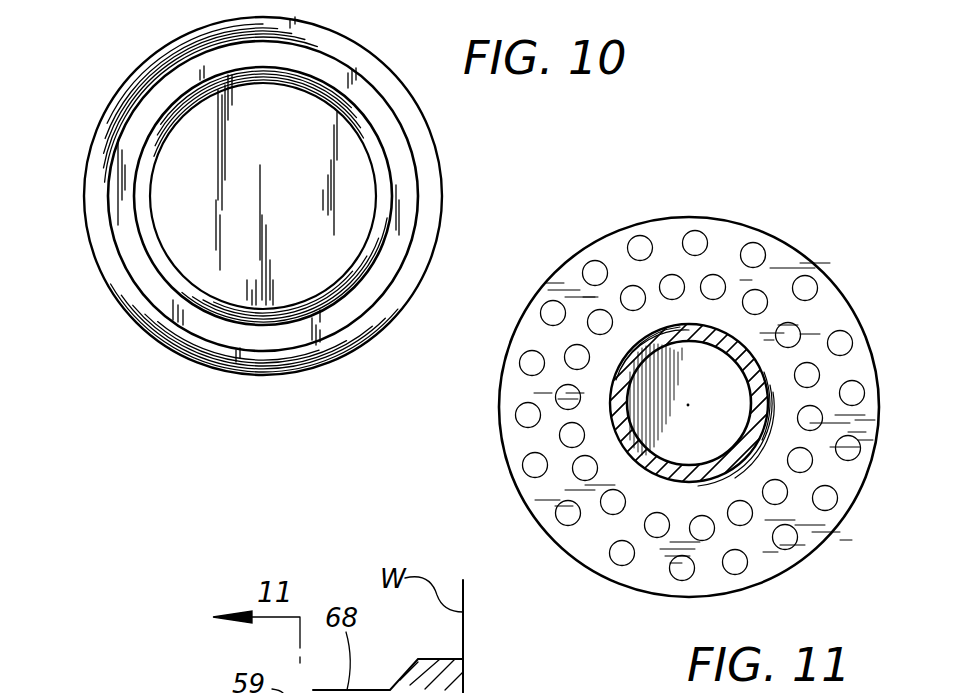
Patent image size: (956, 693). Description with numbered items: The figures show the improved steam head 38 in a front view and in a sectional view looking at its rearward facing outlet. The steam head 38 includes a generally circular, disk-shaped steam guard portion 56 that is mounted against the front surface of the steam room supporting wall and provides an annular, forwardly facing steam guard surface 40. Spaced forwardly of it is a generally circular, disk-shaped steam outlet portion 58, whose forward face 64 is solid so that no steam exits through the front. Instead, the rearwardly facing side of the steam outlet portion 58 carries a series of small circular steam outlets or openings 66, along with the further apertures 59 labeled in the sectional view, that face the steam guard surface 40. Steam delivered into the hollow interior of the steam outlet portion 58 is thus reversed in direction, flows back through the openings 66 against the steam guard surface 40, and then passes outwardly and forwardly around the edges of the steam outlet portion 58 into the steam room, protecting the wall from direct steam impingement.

In FIG. 10, the steam head 38 is at (97, 98).
In FIG. 11, the steam head 38 is at (777, 218).
In FIG. 10, the steam guard surface 40 is at (268, 336).
In FIG. 10, the steam guard portion 56 is at (216, 360).
In FIG. 10, the steam outlet portion 58 is at (387, 170).
In FIG. 11, the steam outlet portion 58 is at (500, 432).
In FIG. 11, the apertures 59 is at (666, 240).
In FIG. 10, the forward face 64 is at (188, 252).
In FIG. 11, the steam outlets 66 is at (613, 502).